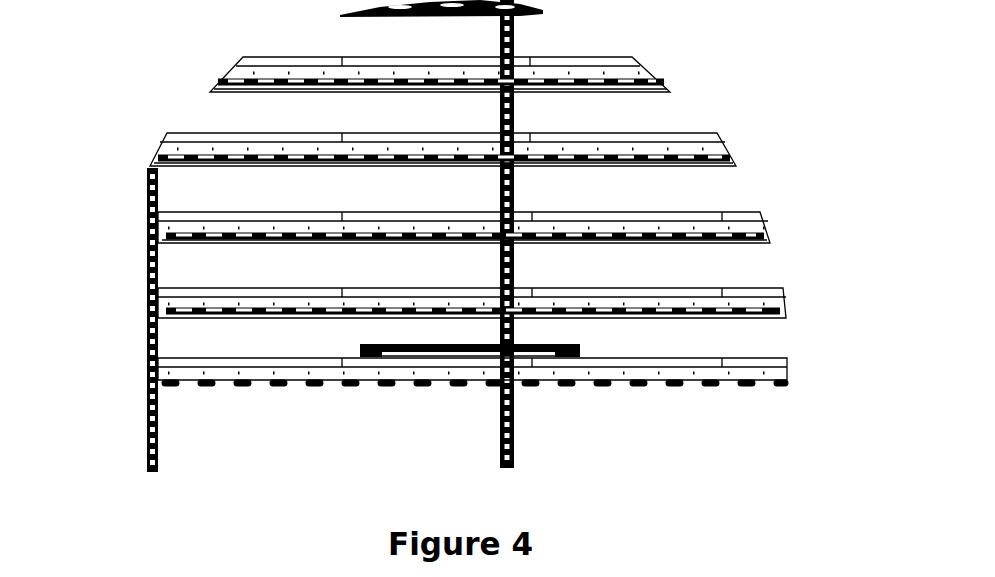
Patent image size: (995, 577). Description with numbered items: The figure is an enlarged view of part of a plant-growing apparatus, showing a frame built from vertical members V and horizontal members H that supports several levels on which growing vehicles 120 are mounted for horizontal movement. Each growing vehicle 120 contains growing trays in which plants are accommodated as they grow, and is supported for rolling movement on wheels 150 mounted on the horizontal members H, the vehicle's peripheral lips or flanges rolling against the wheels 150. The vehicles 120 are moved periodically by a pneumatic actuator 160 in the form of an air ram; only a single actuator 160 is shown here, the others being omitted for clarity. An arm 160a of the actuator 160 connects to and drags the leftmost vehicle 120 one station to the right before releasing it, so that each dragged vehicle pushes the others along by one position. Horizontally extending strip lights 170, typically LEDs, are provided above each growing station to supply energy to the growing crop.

The growing vehicle 120 is at (197, 135).
The strip light 170 is at (147, 172).
The wheel 150 is at (205, 385).
The pneumatic actuator 160 is at (475, 414).
The arm 160a is at (192, 351).
The horizontal member H is at (787, 365).
The vertical member V is at (515, 450).